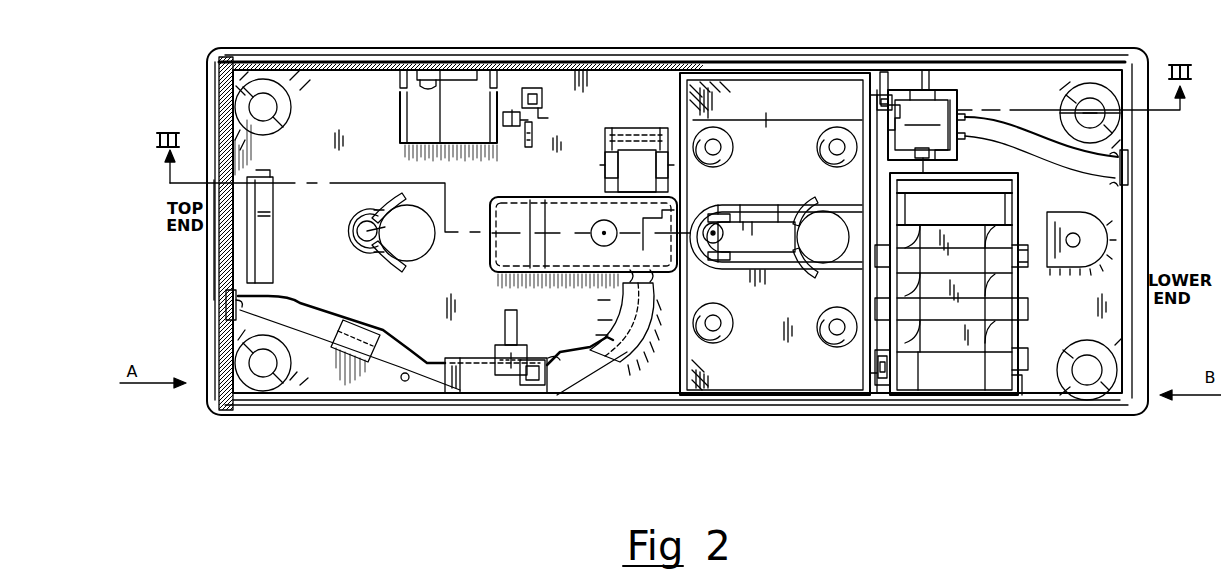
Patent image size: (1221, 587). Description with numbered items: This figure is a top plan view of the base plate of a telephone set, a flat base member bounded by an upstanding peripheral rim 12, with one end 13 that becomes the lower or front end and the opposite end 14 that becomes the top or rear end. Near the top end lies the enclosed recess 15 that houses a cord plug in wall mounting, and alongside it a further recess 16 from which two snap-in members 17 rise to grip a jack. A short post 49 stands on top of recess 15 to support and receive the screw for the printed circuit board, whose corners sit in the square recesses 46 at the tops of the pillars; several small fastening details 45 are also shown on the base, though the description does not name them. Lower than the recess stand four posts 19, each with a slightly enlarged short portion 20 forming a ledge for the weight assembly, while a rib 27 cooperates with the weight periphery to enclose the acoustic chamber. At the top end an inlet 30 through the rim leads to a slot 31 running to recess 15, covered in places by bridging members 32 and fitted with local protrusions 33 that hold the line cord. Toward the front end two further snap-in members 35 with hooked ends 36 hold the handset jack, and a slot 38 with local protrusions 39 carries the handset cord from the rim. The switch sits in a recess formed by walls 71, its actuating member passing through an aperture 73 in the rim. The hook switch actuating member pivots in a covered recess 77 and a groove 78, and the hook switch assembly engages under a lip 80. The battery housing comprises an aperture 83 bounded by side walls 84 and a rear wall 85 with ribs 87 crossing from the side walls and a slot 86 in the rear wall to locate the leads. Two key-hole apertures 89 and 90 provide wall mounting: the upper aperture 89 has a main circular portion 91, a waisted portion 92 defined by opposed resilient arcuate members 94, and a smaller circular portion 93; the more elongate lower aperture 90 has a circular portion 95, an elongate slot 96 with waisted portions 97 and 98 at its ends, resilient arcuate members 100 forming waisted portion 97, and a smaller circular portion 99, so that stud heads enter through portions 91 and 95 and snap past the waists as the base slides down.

The upstanding peripheral rim 12 is at (292, 50).
The end 13 is at (1146, 240).
The end 14 is at (207, 243).
The enclosed recess 15 is at (553, 219).
The recess 16 is at (665, 140).
The snap-in members 17 is at (656, 165).
The posts 19 is at (830, 136).
The short portion 20 is at (826, 152).
The rib 27 is at (680, 372).
The inlet 30 is at (226, 308).
The slot 31 is at (323, 345).
The bridging members 32 is at (350, 375).
The local protrusions 33 is at (233, 322).
The snap-in members 35 is at (945, 90).
The hooked ends 36 is at (912, 90).
The slot 38 is at (1050, 150).
The local protrusions 39 is at (1002, 125).
The fastener 45 is at (534, 86).
The square recesses 46 is at (540, 108).
The short post 49 is at (600, 221).
The walls 71 is at (396, 118).
The aperture 73 is at (428, 84).
The covered recess 77 is at (507, 392).
The groove 78 is at (512, 112).
The lip 80 is at (260, 271).
The aperture 83 is at (937, 379).
The side walls 84 is at (918, 393).
The rear wall 85 is at (975, 178).
The slot 86 is at (948, 174).
The ribs 87 is at (982, 393).
The key-hole aperture 89 is at (418, 282).
The key-hole aperture 90 is at (784, 275).
The main circular portion 91 is at (424, 249).
The waisted slot portion 92 is at (343, 252).
The further circular portion 93 is at (358, 231).
The resilient arcuate members 94 is at (376, 233).
The circular portion 95 is at (833, 212).
The elongate slot 96 is at (773, 222).
The waisted portion 97 is at (800, 206).
The waisted portion 98 is at (743, 222).
The smaller circular portion 99 is at (710, 212).
The resilient arcuate members 100 is at (790, 232).